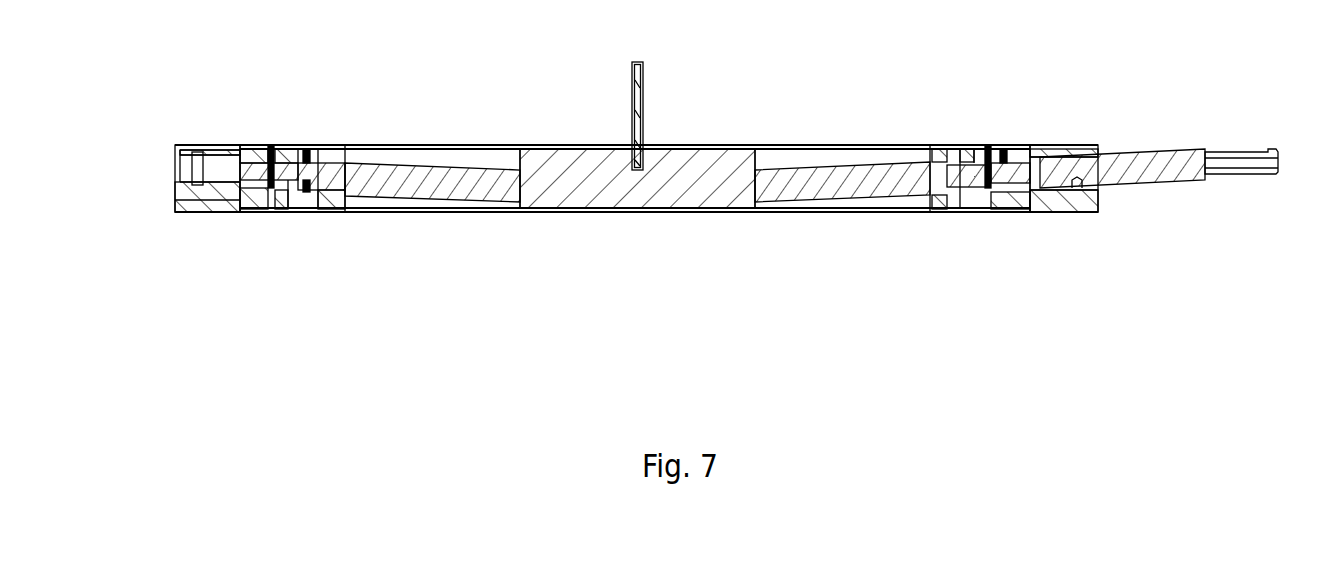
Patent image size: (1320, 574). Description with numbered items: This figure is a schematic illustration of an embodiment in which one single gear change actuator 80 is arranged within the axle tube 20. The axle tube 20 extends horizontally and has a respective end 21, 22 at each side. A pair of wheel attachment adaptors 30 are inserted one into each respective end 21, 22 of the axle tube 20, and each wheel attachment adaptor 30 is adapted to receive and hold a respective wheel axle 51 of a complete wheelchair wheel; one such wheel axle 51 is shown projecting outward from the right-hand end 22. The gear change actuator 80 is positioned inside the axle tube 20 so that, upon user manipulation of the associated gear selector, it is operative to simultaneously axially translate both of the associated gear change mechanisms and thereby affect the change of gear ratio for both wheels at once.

The axle tube 20 is at (480, 145).
The end of the axle tube 21 is at (175, 200).
The end of the axle tube 22 is at (1100, 202).
The wheel attachment adaptor 30 is at (290, 125).
The wheel axle 51 is at (1140, 147).
The gear change actuator 80 is at (670, 168).